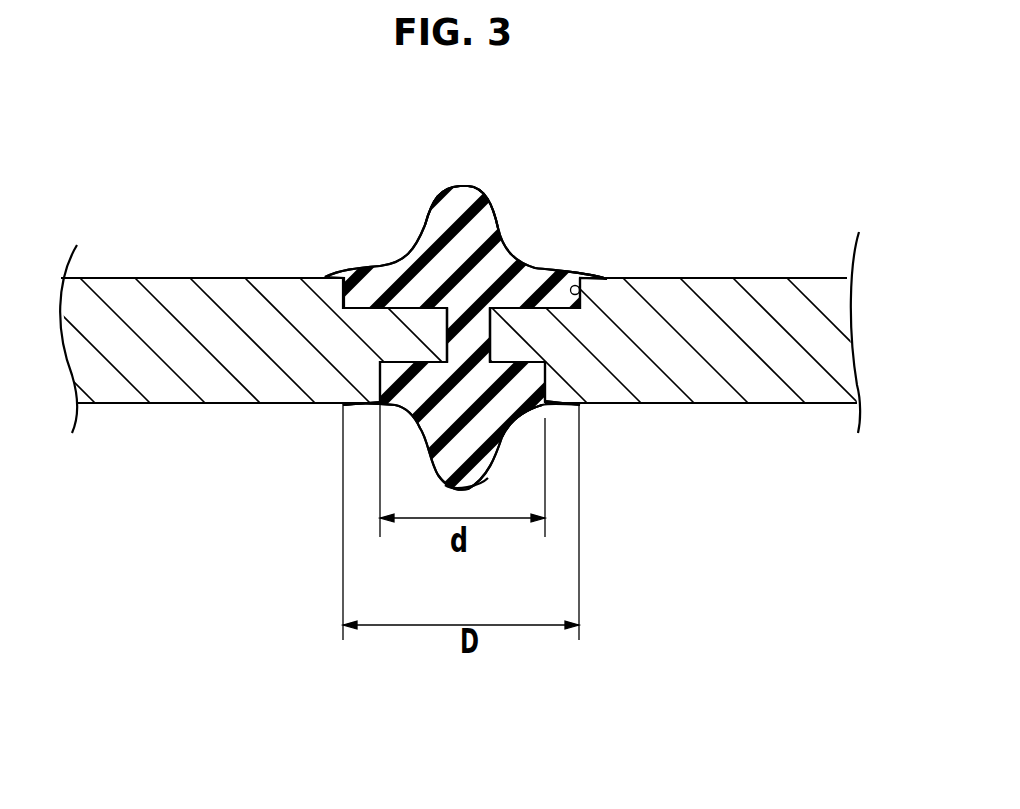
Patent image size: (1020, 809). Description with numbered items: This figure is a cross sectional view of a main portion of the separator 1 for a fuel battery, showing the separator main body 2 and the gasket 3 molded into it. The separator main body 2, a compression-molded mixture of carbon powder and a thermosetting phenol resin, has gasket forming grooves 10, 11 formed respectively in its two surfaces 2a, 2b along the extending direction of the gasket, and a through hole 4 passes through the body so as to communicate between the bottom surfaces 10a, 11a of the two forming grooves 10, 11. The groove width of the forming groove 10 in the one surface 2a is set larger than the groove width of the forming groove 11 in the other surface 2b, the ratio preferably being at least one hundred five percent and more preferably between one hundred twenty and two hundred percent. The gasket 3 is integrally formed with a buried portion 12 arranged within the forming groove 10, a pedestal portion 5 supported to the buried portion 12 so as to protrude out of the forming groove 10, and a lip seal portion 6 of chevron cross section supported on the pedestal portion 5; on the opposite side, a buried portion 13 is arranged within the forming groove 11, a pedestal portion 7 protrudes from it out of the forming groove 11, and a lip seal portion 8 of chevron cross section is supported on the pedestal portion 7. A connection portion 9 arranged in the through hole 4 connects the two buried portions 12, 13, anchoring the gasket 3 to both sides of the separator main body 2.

The separator 1 is at (758, 272).
The separator main body 2 is at (803, 320).
The one surface 2a is at (177, 278).
The other surface 2b is at (163, 404).
The gasket 3 is at (460, 242).
The through hole 4 is at (482, 405).
The pedestal portion 5 is at (516, 292).
The lip seal portion 6 is at (457, 207).
The pedestal portion 7 is at (537, 405).
The lip seal portion 8 is at (473, 470).
The connection portion 9 is at (450, 360).
The gasket forming groove 10 is at (590, 286).
The bottom surface 10a is at (363, 307).
The gasket forming groove 11 is at (568, 402).
The bottom surface 11a is at (375, 406).
The buried portion 12 is at (533, 268).
The buried portion 13 is at (417, 387).